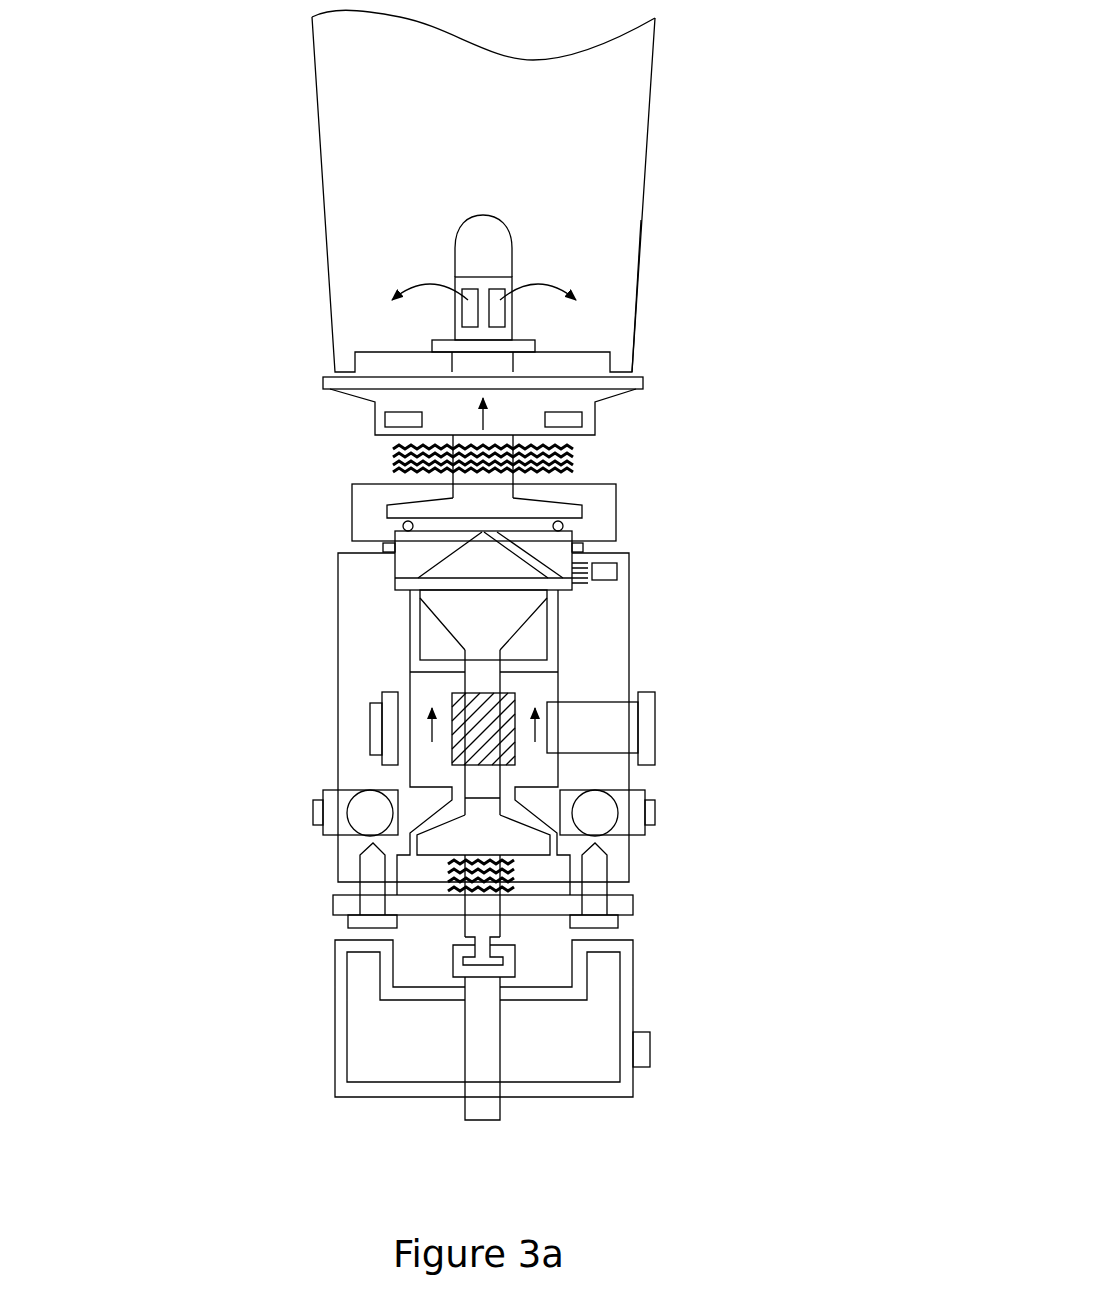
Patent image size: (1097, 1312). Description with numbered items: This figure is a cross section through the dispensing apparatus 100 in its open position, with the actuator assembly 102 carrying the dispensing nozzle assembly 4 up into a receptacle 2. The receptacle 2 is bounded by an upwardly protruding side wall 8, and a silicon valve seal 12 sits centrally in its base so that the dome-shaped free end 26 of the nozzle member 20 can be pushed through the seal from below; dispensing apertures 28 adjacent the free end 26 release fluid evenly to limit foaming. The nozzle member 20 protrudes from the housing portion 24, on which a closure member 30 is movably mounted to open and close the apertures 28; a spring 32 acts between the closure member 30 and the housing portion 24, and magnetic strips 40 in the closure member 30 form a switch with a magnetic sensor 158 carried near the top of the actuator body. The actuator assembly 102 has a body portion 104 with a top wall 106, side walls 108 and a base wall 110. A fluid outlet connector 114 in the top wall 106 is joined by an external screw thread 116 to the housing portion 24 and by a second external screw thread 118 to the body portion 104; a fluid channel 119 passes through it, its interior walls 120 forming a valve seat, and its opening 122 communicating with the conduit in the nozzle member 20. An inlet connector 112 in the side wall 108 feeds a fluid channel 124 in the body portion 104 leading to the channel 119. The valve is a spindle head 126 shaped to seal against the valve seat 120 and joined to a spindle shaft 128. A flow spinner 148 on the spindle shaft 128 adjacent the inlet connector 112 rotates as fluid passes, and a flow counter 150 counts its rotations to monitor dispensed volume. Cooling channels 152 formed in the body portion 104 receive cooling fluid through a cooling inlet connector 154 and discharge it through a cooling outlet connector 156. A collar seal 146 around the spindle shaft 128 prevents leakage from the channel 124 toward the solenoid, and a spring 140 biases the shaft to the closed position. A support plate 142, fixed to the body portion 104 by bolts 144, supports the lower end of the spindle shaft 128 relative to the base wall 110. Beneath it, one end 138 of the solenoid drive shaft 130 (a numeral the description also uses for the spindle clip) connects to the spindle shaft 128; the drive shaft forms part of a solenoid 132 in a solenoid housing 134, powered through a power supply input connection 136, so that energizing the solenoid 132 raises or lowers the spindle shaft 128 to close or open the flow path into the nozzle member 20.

The receptacle 2 is at (672, 90).
The side wall 8 is at (645, 185).
The second free end 26 is at (487, 218).
The nozzle member 20 is at (523, 238).
The dispensing apertures 28 is at (473, 316).
The silicon valve seal 12 is at (540, 340).
The dispensing apparatus 100 is at (140, 373).
The closure member 30 is at (643, 402).
The magnetic strips 40 is at (397, 418).
The spring 32 is at (398, 450).
The housing portion 24 is at (375, 497).
The opening 122 is at (500, 524).
The dispensing nozzle assembly 4 is at (672, 487).
The external screw thread 116 is at (573, 545).
The top wall 106 is at (357, 553).
The fluid outlet connector 114 is at (552, 553).
The fluid channel 119 is at (448, 546).
The interior walls 120 is at (410, 574).
The magnetic sensor 158 is at (717, 570).
The external screw thread 118 is at (573, 580).
The spindle head 126 is at (477, 570).
The solenoid drive shaft 130 is at (497, 640).
The body portion 104 is at (642, 657).
The fluid channel 124 is at (418, 681).
The side walls 108 is at (630, 686).
The inlet connector 112 is at (647, 745).
The flow counter 150 is at (370, 720).
The flow spinner 148 is at (480, 750).
The spindle shaft 128 is at (253, 782).
The cooling outlet connector 156 is at (345, 808).
The cooling inlet connector 154 is at (600, 803).
The fluid cooling channels 152 is at (365, 813).
The collar seal 146 is at (460, 838).
The spring 140 is at (520, 862).
The base wall 110 is at (350, 883).
The support plate 142 is at (622, 903).
The bolts 144 is at (373, 922).
The one end 138 is at (520, 955).
The solenoid 132 is at (597, 1020).
The solenoid housing 134 is at (343, 1070).
The power supply input connection 136 is at (647, 1058).
The actuator assembly 102 is at (832, 828).